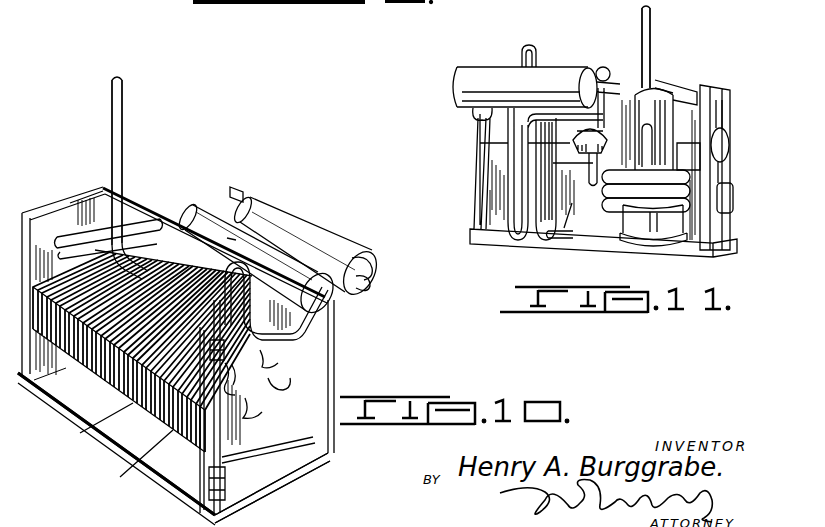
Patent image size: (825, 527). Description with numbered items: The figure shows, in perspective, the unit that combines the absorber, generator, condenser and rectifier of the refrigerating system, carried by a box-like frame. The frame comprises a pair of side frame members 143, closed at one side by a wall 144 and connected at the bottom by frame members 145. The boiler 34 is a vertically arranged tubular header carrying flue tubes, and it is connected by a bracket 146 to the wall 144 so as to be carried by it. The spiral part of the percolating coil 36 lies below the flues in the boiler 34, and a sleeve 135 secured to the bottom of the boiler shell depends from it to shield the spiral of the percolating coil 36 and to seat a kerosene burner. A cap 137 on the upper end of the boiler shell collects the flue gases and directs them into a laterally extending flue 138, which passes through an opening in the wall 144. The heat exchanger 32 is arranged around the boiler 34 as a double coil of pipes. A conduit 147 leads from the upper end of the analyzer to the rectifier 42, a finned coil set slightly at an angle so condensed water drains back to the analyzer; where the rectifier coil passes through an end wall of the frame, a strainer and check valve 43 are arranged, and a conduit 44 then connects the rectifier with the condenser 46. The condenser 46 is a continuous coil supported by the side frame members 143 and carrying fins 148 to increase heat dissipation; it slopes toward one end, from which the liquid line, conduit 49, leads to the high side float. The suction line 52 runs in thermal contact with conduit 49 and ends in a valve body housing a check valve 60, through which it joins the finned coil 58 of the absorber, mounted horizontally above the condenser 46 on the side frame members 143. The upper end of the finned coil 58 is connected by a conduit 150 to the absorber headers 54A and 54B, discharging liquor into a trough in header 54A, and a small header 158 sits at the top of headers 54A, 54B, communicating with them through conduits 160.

In FIG. 10, the heat exchanger 32 is at (236, 442).
In FIG. 11, the heat exchanger 32 is at (572, 214).
In FIG. 11, the boiler 34 is at (665, 130).
In FIG. 11, the percolating coil 36 is at (733, 170).
In FIG. 10, the rectifier 42 is at (62, 248).
In FIG. 10, the strainer and check valve 43 is at (228, 350).
In FIG. 10, the conduit 44 is at (246, 262).
In FIG. 11, the conduit 44 is at (535, 50).
In FIG. 10, the condenser 46 is at (264, 410).
In FIG. 10, the conduit 49 is at (112, 84).
In FIG. 11, the conduit 49 is at (652, 12).
In FIG. 10, the suction line 52 is at (122, 82).
In FIG. 11, the suction line 52 is at (642, 12).
In FIG. 10, the header 54A is at (265, 227).
In FIG. 11, the header 54A is at (457, 85).
In FIG. 10, the header 54B is at (230, 238).
In FIG. 10, the finned coil 58 is at (208, 458).
In FIG. 10, the check valve 60 is at (210, 500).
In FIG. 11, the sleeve 135 is at (650, 226).
In FIG. 11, the cap 137 is at (655, 92).
In FIG. 10, the flue 138 is at (74, 203).
In FIG. 11, the flue 138 is at (690, 98).
In FIG. 10, the side frame members 143 is at (62, 210).
In FIG. 11, the wall 144 is at (717, 85).
In FIG. 10, the frame members 145 is at (315, 462).
In FIG. 11, the frame members 145 is at (646, 252).
In FIG. 11, the bracket 146 is at (730, 145).
In FIG. 10, the conduit 147 is at (155, 215).
In FIG. 10, the fins 148 is at (112, 430).
In FIG. 10, the conduit 150 is at (372, 295).
In FIG. 10, the header 158 is at (228, 200).
In FIG. 10, the conduits 160 is at (240, 236).